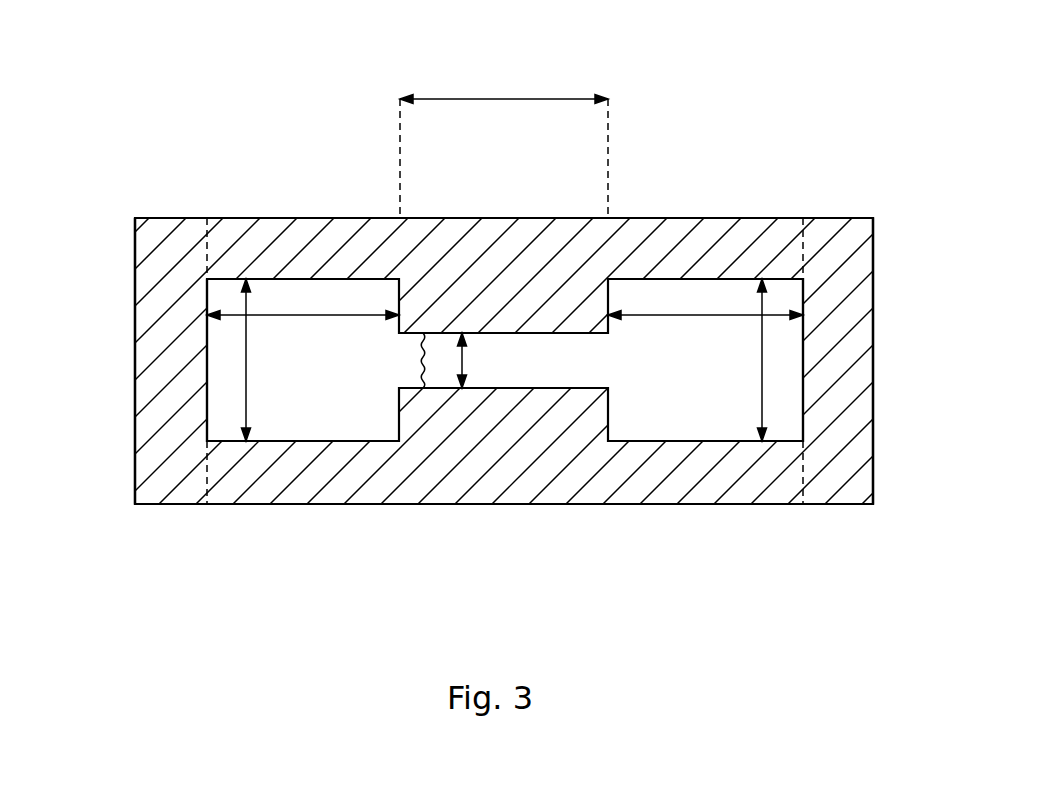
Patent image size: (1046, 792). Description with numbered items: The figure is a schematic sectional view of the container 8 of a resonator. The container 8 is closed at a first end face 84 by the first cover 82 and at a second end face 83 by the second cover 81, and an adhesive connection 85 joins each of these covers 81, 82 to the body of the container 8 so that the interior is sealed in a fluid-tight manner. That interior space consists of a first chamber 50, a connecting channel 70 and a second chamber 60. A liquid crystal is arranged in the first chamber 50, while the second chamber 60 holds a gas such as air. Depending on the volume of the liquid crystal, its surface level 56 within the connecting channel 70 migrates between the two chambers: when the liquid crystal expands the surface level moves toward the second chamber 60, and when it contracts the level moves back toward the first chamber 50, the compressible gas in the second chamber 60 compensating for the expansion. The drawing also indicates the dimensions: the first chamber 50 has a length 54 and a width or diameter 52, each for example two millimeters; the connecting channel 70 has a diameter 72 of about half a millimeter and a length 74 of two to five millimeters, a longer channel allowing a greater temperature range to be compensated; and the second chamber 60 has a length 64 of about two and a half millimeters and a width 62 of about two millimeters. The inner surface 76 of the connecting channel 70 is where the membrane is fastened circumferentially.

The container 8 is at (313, 237).
The first chamber 50 is at (313, 400).
The width or diameter 52 is at (246, 386).
The length 54 is at (360, 314).
The surface level 56 is at (420, 375).
The second chamber 60 is at (687, 413).
The width 62 is at (763, 347).
The length 64 is at (680, 315).
The connecting channel 70 is at (518, 360).
The diameter 72 is at (467, 357).
The length 74 is at (518, 99).
The inner surface 76 is at (578, 375).
The second cover 81 is at (840, 240).
The first cover 82 is at (172, 250).
The second end face 83 is at (900, 383).
The first end face 84 is at (118, 361).
The adhesive connection 85 is at (207, 243).